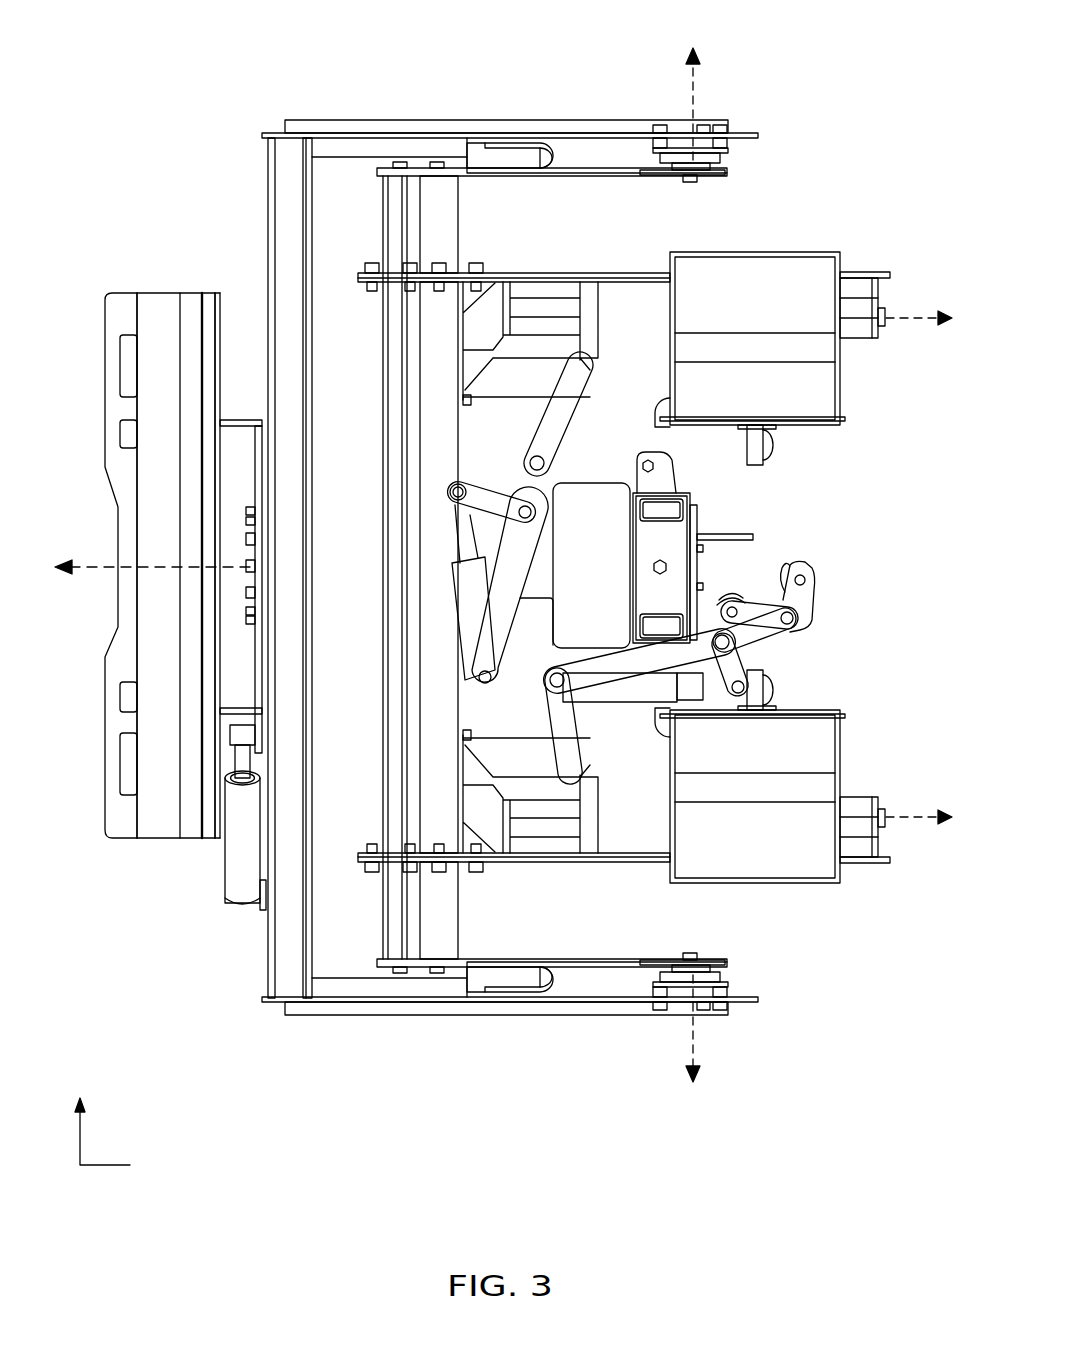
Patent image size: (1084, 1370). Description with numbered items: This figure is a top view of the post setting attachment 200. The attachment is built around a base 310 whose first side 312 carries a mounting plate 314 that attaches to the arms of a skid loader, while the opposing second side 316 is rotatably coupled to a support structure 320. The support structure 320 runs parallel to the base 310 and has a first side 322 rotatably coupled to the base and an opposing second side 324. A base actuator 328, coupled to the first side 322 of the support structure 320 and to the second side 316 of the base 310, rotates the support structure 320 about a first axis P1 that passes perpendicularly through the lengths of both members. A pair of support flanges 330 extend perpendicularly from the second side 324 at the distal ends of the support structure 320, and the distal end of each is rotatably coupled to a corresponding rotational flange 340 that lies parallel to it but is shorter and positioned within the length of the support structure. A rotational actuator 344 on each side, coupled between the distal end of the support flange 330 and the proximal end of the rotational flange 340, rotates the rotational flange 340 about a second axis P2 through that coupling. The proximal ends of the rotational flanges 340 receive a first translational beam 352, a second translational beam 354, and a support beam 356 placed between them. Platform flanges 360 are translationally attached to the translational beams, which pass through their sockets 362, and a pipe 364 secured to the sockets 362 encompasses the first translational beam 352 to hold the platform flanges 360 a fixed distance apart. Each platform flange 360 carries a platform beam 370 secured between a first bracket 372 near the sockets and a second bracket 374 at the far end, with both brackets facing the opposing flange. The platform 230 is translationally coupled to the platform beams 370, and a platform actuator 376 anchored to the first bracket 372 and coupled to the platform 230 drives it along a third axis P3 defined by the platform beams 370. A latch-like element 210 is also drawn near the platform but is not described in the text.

The post setting attachment 200 is at (182, 50).
The latch mechanism 210 is at (778, 628).
The platform 230 is at (652, 425).
The base 310 is at (193, 298).
The first side 312 is at (157, 827).
The mounting plate 314 is at (122, 405).
The second side 316 is at (212, 828).
The support structure 320 is at (292, 953).
The first side 322 is at (260, 503).
The second side 324 is at (313, 503).
The base actuator 328 is at (243, 885).
The support flanges 330 is at (375, 128).
The rotational flange 340 is at (612, 172).
The rotational actuator 344 is at (596, 155).
The first translational beam 352 is at (440, 248).
The second translational beam 354 is at (383, 945).
The support beam 356 is at (400, 575).
The platform flanges 360 is at (853, 277).
The sockets 362 is at (442, 293).
The pipe 364 is at (445, 700).
The platform beam 370 is at (550, 318).
The first bracket 372 is at (470, 278).
The second bracket 374 is at (880, 293).
The platform actuator 376 is at (570, 382).
The first axis P1 is at (113, 565).
The second axis P2 is at (698, 102).
The third axis P3 is at (893, 322).